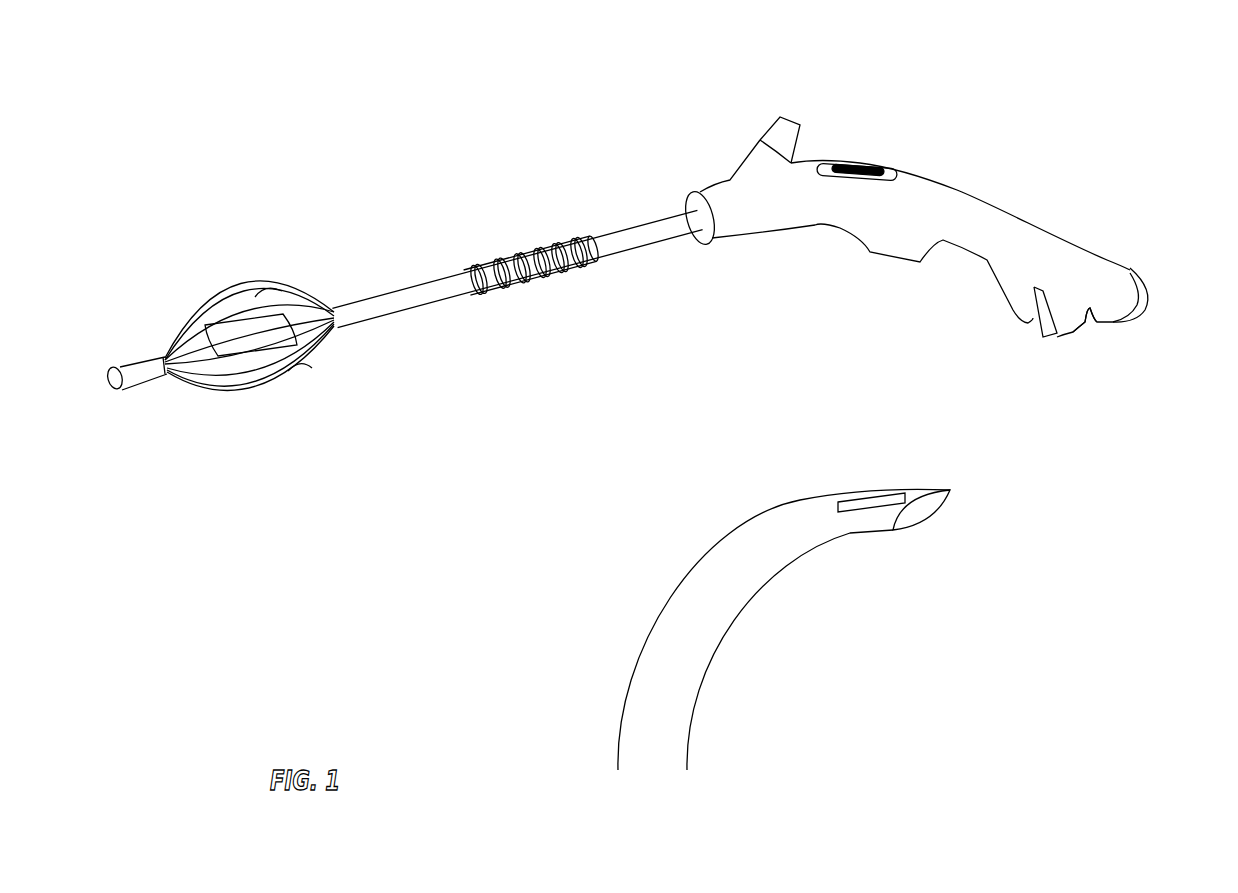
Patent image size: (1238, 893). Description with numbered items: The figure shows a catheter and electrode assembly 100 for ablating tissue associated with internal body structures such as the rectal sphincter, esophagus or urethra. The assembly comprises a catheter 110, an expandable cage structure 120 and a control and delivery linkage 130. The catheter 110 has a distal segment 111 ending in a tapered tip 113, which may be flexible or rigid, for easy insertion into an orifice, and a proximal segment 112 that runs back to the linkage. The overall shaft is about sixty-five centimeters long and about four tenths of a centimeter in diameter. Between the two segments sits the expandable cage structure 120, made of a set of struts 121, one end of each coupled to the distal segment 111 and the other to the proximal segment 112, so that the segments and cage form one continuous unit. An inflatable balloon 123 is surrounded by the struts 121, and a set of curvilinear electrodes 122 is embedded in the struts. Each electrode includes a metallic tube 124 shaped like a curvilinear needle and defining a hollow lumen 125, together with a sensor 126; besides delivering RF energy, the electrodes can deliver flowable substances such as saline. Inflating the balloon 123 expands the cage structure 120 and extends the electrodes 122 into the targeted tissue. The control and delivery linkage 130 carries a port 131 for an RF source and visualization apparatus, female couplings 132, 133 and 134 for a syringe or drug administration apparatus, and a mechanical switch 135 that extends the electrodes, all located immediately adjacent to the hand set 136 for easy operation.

The catheter and electrode assembly 100 is at (570, 96).
The catheter 110 is at (458, 97).
The distal segment 111 is at (163, 377).
The proximal segment 112 is at (690, 193).
The tapered tip 113 is at (115, 368).
The expandable cage structure 120 is at (353, 417).
The struts 121 is at (306, 366).
The curvilinear electrodes 122 is at (307, 370).
The inflatable balloon 123 is at (253, 307).
The metallic tube 124 is at (700, 687).
The hollow lumen 125 is at (922, 512).
The sensor 126 is at (863, 502).
The control and delivery linkage 130 is at (1162, 58).
The port 131 is at (1142, 305).
The female coupling 132 is at (1073, 327).
The female coupling 133 is at (1037, 328).
The female coupling 134 is at (782, 127).
The mechanical switch 135 is at (860, 161).
The hand set 136 is at (958, 192).